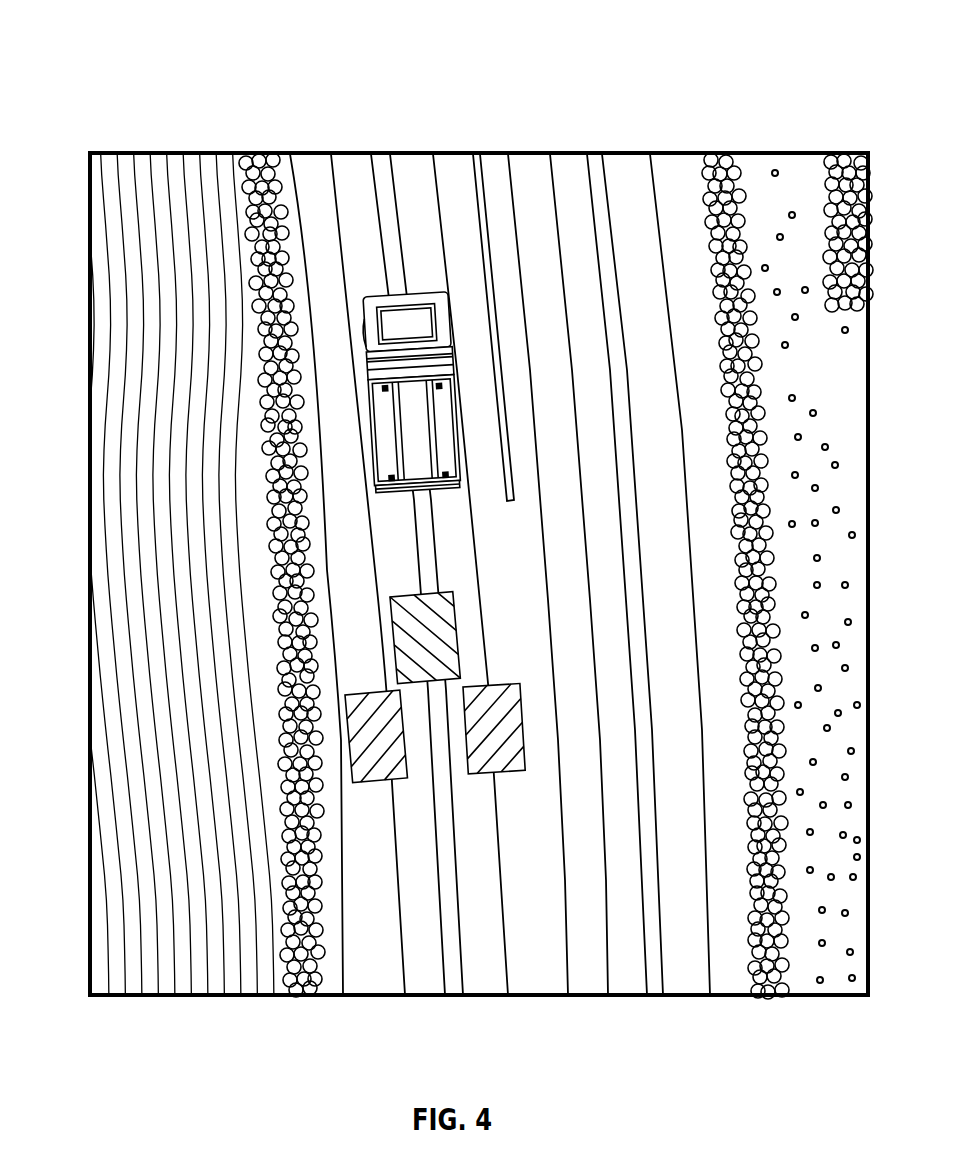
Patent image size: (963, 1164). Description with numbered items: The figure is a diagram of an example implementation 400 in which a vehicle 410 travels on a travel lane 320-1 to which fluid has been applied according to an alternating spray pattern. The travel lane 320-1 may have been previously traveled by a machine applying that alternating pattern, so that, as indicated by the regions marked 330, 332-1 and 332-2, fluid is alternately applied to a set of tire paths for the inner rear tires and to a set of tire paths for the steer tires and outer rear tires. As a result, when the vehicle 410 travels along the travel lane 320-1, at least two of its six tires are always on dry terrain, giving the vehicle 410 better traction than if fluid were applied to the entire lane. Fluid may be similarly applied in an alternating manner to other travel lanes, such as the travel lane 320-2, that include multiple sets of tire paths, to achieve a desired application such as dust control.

The example implementation 400 is at (119, 52).
The vehicle 410 is at (369, 423).
The travel lane 320-1 is at (330, 154).
The travel lane 320-2 is at (550, 154).
The fluid application region 330 is at (393, 640).
The fluid application region 332-1 is at (375, 783).
The fluid application region 332-2 is at (480, 773).